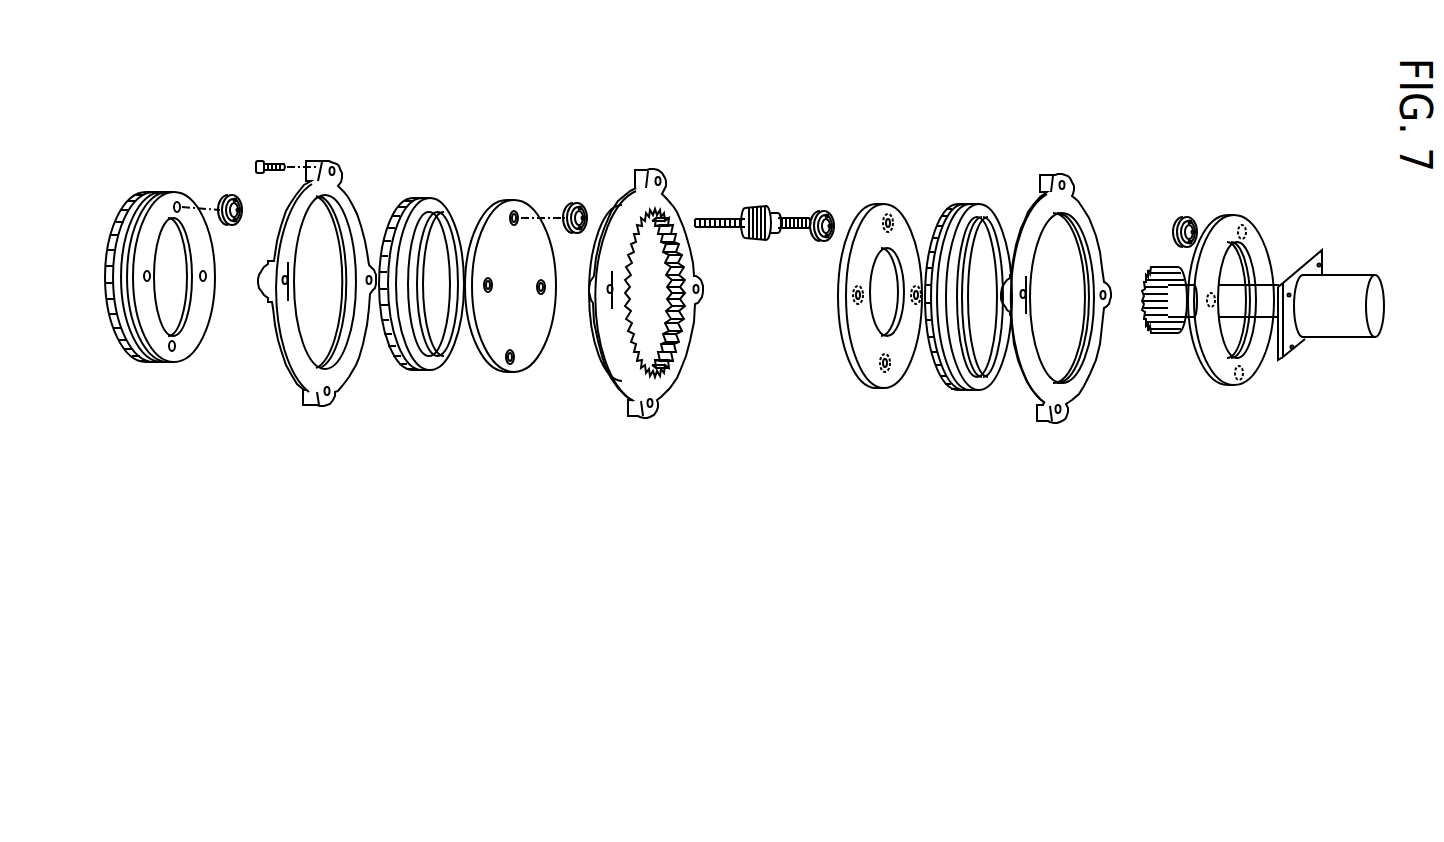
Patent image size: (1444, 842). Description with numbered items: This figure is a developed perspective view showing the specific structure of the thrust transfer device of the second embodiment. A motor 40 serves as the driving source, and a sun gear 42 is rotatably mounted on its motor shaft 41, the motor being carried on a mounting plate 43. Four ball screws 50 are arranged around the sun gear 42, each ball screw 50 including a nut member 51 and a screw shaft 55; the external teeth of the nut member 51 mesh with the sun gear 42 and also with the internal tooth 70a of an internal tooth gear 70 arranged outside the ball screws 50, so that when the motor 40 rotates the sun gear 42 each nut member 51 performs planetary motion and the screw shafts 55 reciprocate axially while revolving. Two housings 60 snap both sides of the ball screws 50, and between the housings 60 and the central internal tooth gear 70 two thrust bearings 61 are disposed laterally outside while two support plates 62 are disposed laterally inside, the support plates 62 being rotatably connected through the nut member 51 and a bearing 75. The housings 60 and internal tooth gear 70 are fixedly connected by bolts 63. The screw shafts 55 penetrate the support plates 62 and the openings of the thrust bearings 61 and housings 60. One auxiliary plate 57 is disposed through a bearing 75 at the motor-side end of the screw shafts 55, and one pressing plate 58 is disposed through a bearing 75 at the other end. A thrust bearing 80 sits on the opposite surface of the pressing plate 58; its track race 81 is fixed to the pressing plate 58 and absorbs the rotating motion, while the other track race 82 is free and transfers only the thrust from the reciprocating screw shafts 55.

The motor 40 is at (1348, 278).
The motor shaft 41 is at (1264, 298).
The sun gear 42 is at (1152, 334).
The mounting plate 43 is at (1297, 352).
The ball screw 50 is at (762, 180).
The nut member 51 is at (745, 242).
The screw shaft 55 is at (789, 212).
The auxiliary plate 57 is at (1225, 386).
The pressing plate 58 is at (179, 364).
The housing 60 is at (333, 158).
The thrust bearing 61 is at (428, 372).
The support plate 62 is at (510, 372).
The bolt 63 is at (261, 158).
The internal tooth gear 70 is at (660, 169).
The internal tooth 70a is at (660, 372).
The bearing 75 is at (233, 193).
The thrust bearing 80 is at (105, 130).
The track race 81 is at (146, 193).
The track race 82 is at (126, 205).